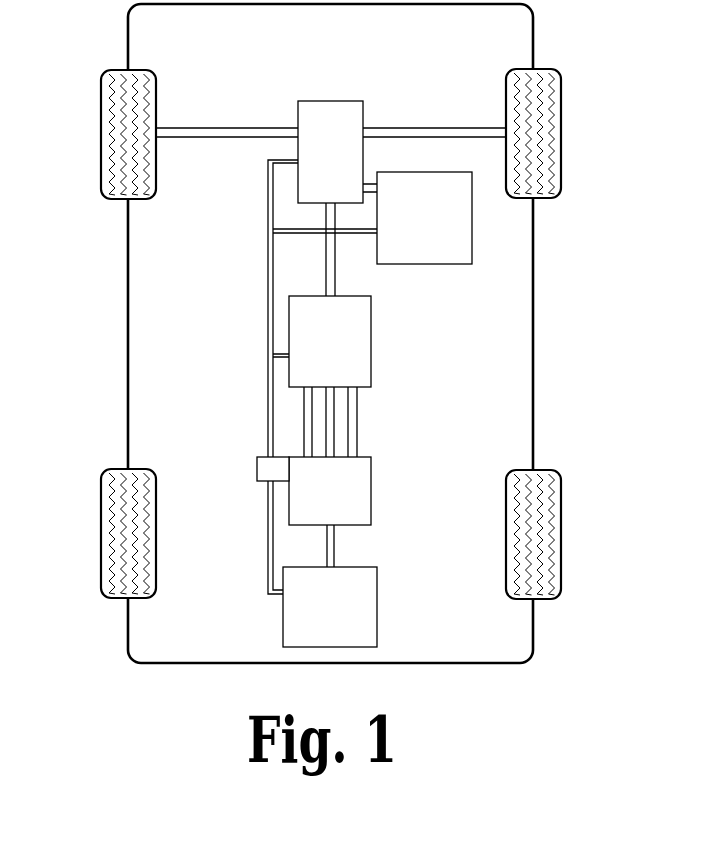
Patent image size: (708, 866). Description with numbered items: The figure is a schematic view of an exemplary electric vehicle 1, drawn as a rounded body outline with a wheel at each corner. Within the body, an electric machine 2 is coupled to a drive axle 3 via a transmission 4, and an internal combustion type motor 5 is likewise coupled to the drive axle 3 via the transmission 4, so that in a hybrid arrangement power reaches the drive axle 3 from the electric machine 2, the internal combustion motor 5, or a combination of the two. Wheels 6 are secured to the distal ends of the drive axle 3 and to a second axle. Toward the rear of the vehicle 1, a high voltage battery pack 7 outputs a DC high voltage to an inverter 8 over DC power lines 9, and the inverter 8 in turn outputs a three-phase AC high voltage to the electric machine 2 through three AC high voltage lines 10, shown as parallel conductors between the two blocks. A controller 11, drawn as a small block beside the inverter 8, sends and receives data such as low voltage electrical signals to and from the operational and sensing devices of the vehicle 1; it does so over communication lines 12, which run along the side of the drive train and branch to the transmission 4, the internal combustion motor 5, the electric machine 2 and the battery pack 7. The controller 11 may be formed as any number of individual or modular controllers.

The vehicle 1 is at (126, 714).
The electric machine 2 is at (364, 341).
The drive axle 3 is at (422, 130).
The transmission 4 is at (325, 103).
The internal combustion type motor 5 is at (467, 248).
The wheels 6 is at (560, 93).
The high voltage battery pack 7 is at (377, 628).
The inverter 8 is at (372, 490).
The DC power lines 9 is at (335, 543).
The AC high voltage lines 10 is at (352, 438).
The controller 11 is at (256, 466).
The communication lines 12 is at (267, 375).